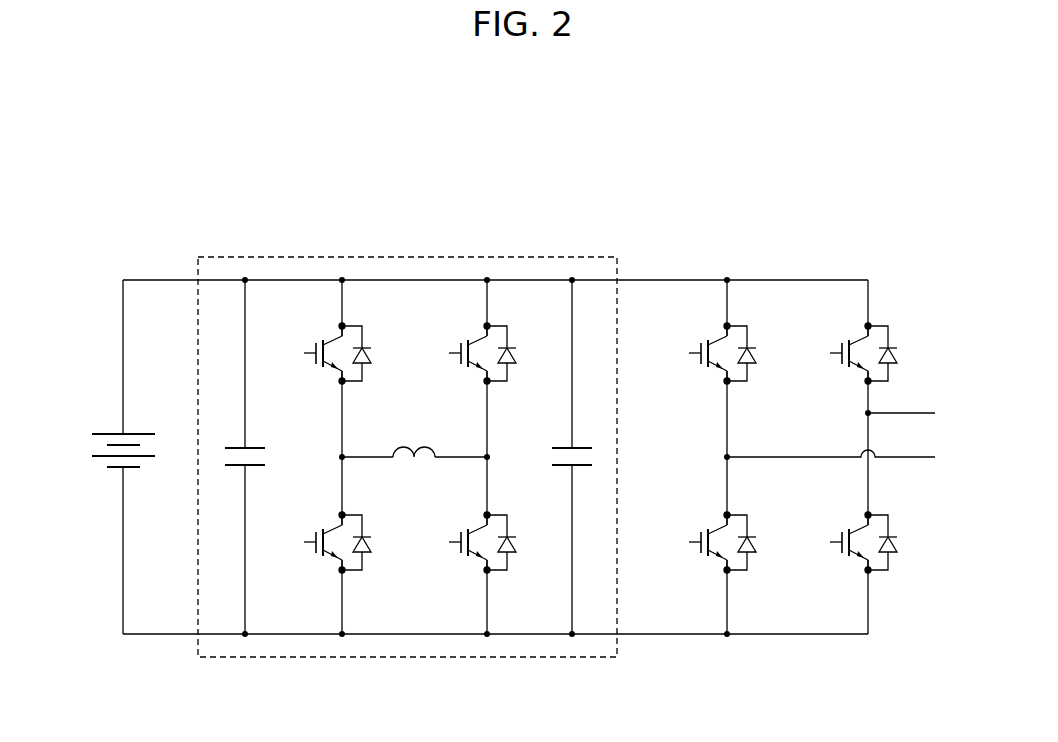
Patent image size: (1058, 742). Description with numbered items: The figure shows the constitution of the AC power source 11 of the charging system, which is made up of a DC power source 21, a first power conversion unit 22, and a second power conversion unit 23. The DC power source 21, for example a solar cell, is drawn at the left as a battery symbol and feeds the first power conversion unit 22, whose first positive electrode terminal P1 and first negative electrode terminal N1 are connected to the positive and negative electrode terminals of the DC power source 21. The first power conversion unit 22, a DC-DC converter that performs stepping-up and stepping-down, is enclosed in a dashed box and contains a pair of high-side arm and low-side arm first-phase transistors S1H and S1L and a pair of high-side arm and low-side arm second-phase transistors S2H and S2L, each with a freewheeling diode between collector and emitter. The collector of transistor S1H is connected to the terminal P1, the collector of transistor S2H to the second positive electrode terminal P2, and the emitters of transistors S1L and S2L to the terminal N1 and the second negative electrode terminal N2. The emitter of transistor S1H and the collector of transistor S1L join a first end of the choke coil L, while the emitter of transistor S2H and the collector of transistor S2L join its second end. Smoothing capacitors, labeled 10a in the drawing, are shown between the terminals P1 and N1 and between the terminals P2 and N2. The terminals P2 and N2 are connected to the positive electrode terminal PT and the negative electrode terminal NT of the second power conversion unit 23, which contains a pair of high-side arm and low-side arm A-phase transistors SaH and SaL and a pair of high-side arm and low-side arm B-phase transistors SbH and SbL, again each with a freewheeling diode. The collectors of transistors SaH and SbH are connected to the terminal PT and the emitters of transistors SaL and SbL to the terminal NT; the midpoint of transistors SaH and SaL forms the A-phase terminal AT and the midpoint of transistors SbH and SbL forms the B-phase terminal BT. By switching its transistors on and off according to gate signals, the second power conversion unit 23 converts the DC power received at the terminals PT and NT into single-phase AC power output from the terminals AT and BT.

The AC power source 11 is at (884, 184).
The DC power source 21 is at (105, 432).
The first power conversion unit 22 is at (413, 257).
The second power conversion unit 23 is at (786, 275).
The capacitor 10a is at (260, 446).
The first positive electrode terminal P1 is at (245, 278).
The second positive electrode terminal P2 is at (572, 278).
The positive electrode terminal PT is at (727, 278).
The first negative electrode terminal N1 is at (245, 637).
The second negative electrode terminal N2 is at (572, 637).
The negative electrode terminal NT is at (727, 637).
The high-side arm first-phase transistor S1H is at (304, 352).
The low-side arm first-phase transistor S1L is at (304, 541).
The high-side arm second-phase transistor S2H is at (449, 352).
The low-side arm second-phase transistor S2L is at (449, 541).
The high-side arm A-phase transistor SaH is at (689, 352).
The low-side arm A-phase transistor SaL is at (689, 541).
The high-side arm B-phase transistor SbH is at (830, 352).
The low-side arm B-phase transistor SbL is at (830, 541).
The choke coil L is at (414, 445).
The A-phase terminal AT is at (724, 456).
The B-phase terminal BT is at (866, 413).